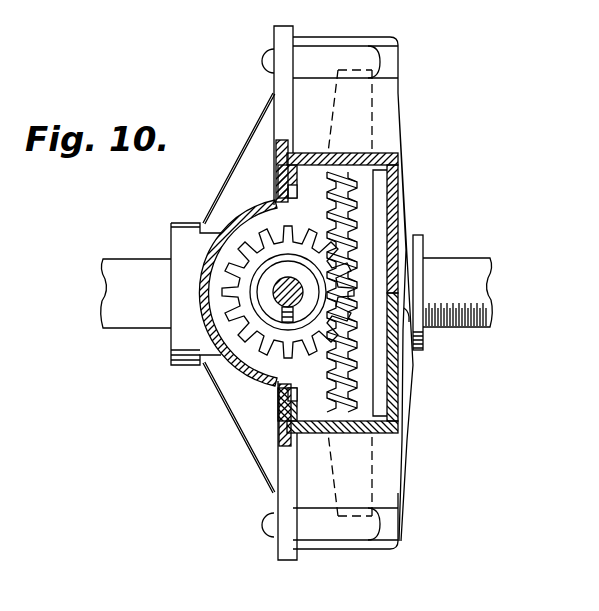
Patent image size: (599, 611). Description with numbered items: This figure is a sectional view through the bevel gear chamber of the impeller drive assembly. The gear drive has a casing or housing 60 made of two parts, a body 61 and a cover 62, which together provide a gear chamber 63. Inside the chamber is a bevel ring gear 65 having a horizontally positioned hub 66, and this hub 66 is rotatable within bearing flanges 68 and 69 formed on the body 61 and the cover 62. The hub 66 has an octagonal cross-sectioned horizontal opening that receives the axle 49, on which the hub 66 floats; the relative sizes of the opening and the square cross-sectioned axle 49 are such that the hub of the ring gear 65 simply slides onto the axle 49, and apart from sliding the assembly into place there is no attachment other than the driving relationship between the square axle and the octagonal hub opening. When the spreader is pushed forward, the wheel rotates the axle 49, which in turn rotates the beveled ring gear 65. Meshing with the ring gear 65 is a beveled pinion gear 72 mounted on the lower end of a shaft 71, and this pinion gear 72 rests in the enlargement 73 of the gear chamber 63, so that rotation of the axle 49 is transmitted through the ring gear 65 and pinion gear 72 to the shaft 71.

The axle 49 is at (117, 290).
The casing or housing 60 is at (259, 466).
The body 61 is at (402, 412).
The cover 62 is at (288, 478).
The gear chamber 63 is at (308, 375).
The bevel ring gear 65 is at (358, 212).
The hub 66 is at (417, 246).
The bearing flange 68 is at (407, 317).
The bearing flange 69 is at (187, 367).
The shaft 71 is at (270, 292).
The beveled pinion gear 72 is at (226, 258).
The enlargement 73 is at (210, 343).